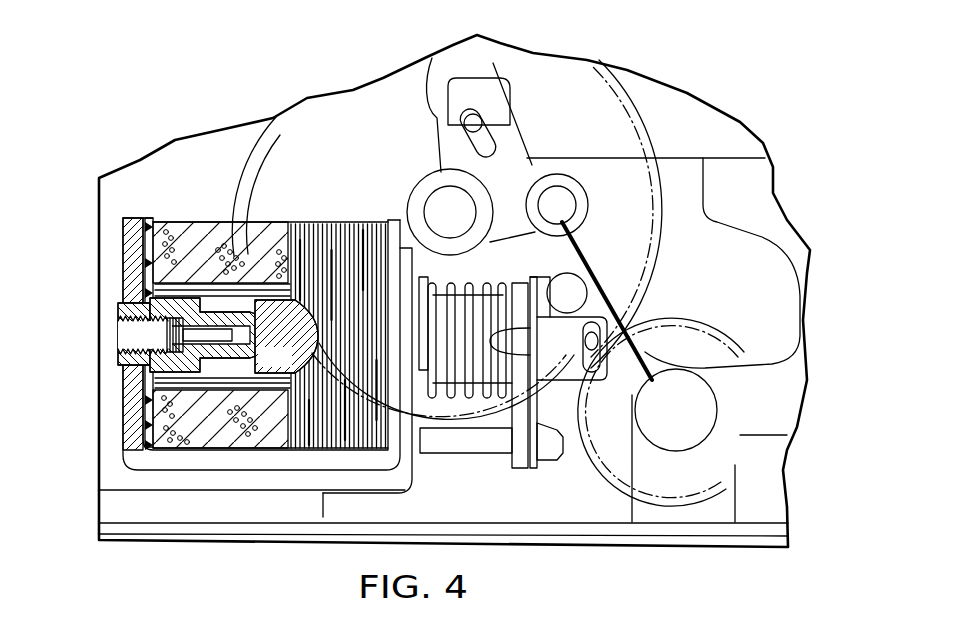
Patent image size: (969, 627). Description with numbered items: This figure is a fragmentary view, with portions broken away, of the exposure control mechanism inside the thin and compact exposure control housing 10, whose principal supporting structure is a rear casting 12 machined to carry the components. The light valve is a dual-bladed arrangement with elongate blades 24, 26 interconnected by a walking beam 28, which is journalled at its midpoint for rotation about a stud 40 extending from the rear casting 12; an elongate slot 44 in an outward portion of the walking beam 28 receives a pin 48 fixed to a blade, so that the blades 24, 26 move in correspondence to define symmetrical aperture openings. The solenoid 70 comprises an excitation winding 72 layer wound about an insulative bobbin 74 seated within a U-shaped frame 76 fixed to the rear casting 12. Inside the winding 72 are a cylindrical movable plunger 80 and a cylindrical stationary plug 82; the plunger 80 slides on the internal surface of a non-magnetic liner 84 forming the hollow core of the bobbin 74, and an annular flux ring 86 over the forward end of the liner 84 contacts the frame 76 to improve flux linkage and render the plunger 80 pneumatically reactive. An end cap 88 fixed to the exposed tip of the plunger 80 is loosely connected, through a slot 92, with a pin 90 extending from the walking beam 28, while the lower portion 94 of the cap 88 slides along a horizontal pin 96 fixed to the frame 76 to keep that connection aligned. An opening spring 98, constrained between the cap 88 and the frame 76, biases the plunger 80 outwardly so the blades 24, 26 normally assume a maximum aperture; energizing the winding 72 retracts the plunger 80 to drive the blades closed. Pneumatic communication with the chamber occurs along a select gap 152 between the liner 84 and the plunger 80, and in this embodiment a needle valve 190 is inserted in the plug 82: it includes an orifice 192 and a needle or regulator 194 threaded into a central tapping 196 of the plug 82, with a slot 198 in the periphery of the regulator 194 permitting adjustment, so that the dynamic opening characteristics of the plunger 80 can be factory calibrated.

The exposure control housing 10 is at (355, 72).
The rear casting 12 is at (647, 538).
The elongate blade 24 is at (720, 175).
The elongate blade 26 is at (607, 173).
The walking beam 28 is at (528, 152).
The stud 40 is at (577, 290).
The elongate slot 44 is at (512, 180).
The pin 48 is at (432, 64).
The solenoid 70 is at (340, 186).
The excitation winding 72 is at (218, 285).
The bobbin 74 is at (153, 218).
The U-shaped frame 76 is at (143, 480).
The plunger 80 is at (457, 307).
The plug 82 is at (190, 280).
The non-magnetic liner 84 is at (232, 290).
The annular flux ring 86 is at (428, 287).
The end cap 88 is at (522, 457).
The pin 90 is at (562, 345).
The slot 92 is at (606, 362).
The lower portion of cap 94 is at (522, 437).
The horizontally disposed pin 96 is at (453, 443).
The opening spring 98 is at (487, 310).
The gap 152 is at (245, 283).
The needle valve 190 is at (84, 349).
The orifice 192 is at (217, 338).
The needle 194 is at (143, 338).
The tapped central portion 196 is at (147, 313).
The slot 198 is at (118, 335).